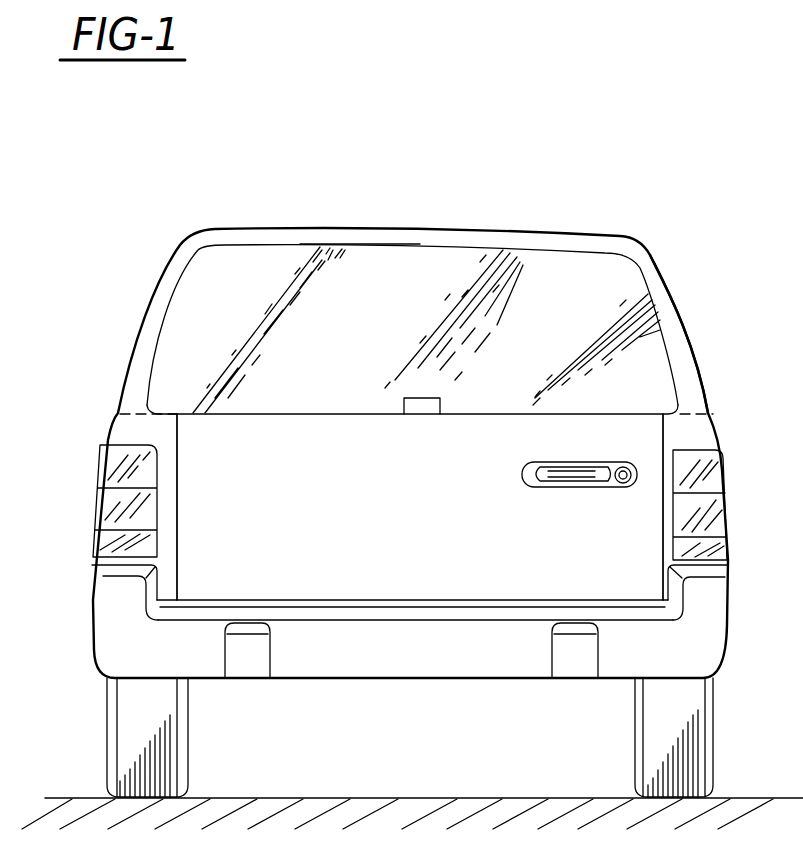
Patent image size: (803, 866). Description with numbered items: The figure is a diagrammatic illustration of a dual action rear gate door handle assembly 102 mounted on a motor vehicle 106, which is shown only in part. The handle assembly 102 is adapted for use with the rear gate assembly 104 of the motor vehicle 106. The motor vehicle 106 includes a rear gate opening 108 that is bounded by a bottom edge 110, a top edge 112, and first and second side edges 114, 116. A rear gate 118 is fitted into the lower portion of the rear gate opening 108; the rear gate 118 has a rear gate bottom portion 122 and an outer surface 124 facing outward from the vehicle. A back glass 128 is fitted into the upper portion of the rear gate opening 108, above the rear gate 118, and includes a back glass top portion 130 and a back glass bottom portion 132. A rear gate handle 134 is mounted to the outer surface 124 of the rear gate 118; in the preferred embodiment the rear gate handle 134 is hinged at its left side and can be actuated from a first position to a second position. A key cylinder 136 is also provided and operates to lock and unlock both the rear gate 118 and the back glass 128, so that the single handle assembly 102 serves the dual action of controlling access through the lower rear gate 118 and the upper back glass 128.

The dual action rear gate door handle assembly 102 is at (420, 583).
The rear gate assembly 104 is at (118, 614).
The motor vehicle 106 is at (652, 255).
The rear gate opening 108 is at (668, 350).
The bottom edge 110 is at (495, 600).
The top edge 112 is at (360, 245).
The first side edge 114 is at (177, 436).
The second side edge 116 is at (668, 422).
The rear gate 118 is at (158, 509).
The rear gate bottom portion 122 is at (335, 584).
The outer surface 124 is at (268, 536).
The back glass 128 is at (200, 299).
The back glass top portion 130 is at (435, 257).
The back glass bottom portion 132 is at (453, 403).
The rear gate handle 134 is at (560, 488).
The key cylinder 136 is at (626, 483).